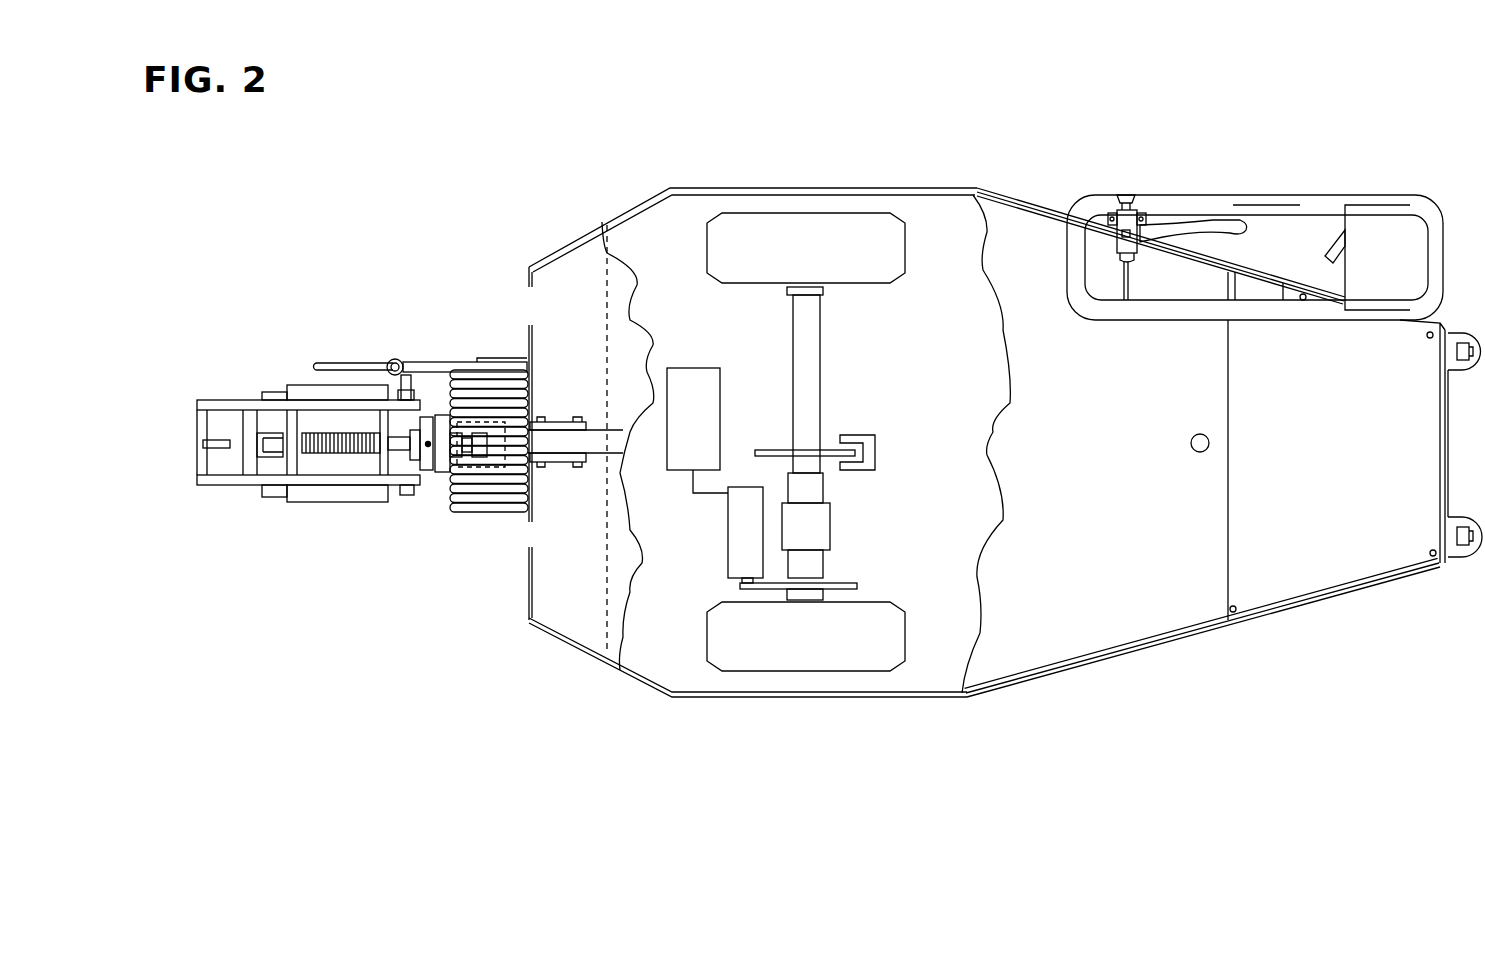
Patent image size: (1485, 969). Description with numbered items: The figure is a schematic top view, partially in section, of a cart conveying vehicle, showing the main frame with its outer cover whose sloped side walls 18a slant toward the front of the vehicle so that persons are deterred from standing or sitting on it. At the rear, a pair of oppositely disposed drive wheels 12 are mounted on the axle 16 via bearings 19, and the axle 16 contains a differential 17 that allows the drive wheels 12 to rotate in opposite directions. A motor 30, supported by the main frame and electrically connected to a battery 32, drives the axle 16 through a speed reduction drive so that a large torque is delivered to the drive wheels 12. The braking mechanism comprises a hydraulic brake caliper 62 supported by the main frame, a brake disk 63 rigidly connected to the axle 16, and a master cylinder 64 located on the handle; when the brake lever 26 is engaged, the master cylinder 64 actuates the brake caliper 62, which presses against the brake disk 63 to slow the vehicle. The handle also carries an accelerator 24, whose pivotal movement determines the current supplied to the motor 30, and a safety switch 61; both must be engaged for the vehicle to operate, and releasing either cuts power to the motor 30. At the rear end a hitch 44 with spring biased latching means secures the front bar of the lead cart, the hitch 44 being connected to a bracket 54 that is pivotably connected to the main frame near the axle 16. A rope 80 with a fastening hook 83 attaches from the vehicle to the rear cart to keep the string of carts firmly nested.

The drive wheels 12 is at (870, 222).
The axle 16 is at (792, 322).
The differential 17 is at (798, 592).
The sloped side walls 18a is at (1043, 205).
The bearings 19 is at (803, 290).
The accelerator 24 is at (1327, 262).
The brake lever 26 is at (1215, 235).
The motor 30 is at (728, 553).
The battery 32 is at (686, 398).
The hitch 44 is at (240, 490).
The bracket 54 is at (520, 453).
The safety switch 61 is at (1305, 200).
The hydraulic brake caliper 62 is at (877, 470).
The brake disk 63 is at (756, 450).
The master cylinder 64 is at (1140, 215).
The rope 80 is at (435, 364).
The fastening hook 83 is at (335, 362).